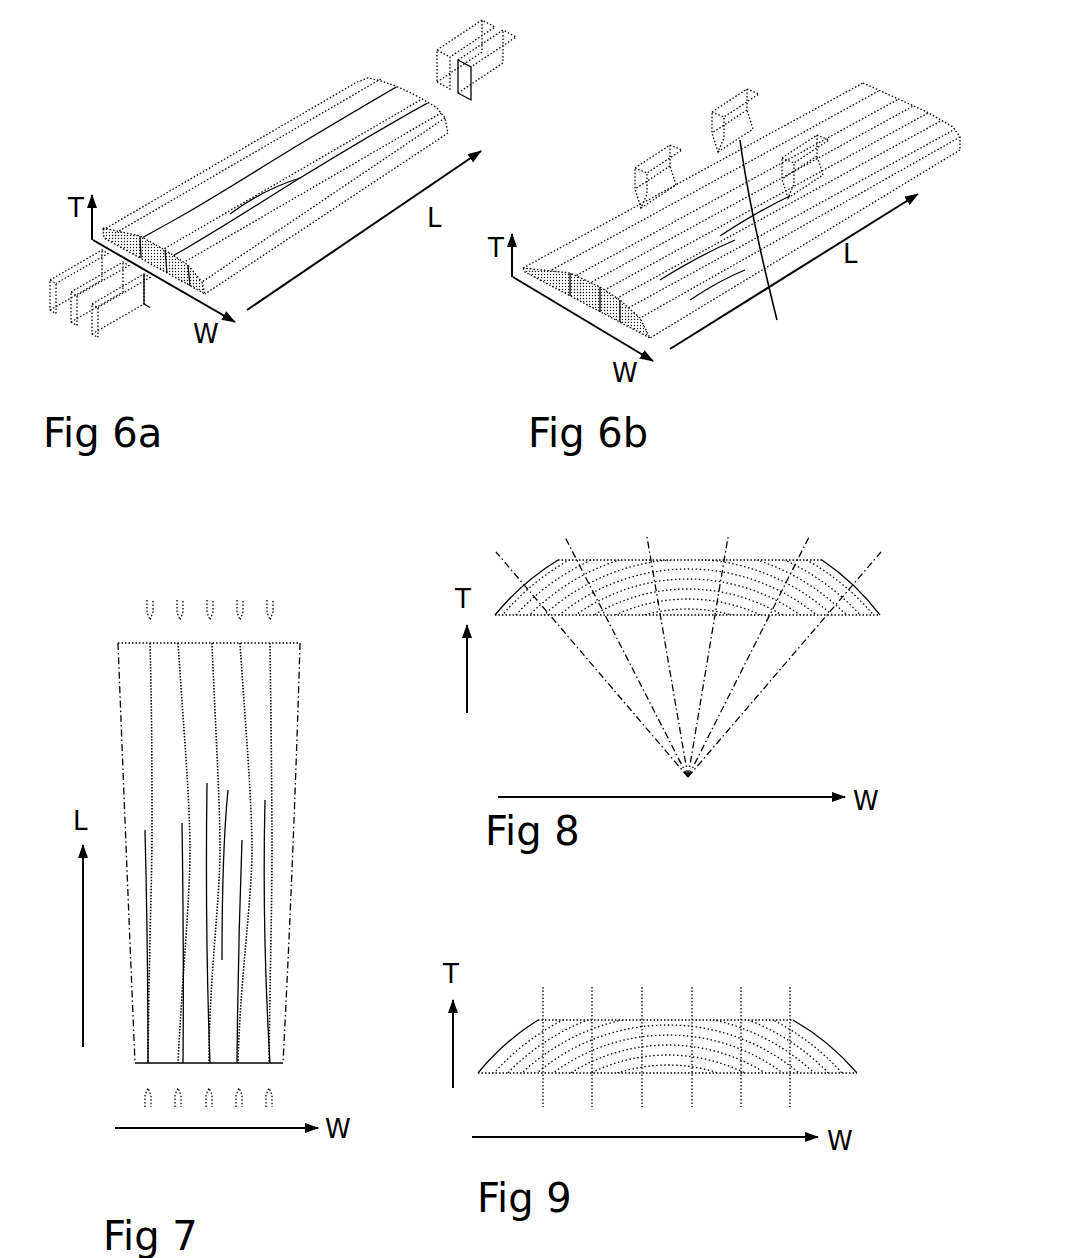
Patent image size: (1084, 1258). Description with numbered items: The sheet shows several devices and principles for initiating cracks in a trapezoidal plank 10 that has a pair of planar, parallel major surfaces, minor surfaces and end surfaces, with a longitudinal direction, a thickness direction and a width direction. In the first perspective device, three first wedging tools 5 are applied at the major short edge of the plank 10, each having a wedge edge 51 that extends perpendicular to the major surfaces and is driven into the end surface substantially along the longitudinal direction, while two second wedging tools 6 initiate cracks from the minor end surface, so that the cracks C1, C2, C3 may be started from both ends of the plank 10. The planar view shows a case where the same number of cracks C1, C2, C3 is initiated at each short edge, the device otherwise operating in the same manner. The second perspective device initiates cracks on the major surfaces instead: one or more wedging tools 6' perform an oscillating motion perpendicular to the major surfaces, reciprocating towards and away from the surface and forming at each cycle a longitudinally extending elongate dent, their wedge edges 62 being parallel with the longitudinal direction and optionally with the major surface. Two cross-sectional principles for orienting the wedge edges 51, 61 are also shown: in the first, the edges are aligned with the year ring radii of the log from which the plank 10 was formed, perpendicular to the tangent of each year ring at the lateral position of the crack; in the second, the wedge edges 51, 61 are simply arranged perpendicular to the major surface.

In FIG. 6A, the plank 10 is at (211, 182).
In FIG. 6B, the plank 10 is at (587, 255).
In FIG. 7, the plank 10 is at (297, 728).
In FIG. 8, the plank 10 is at (823, 568).
In FIG. 9, the plank 10 is at (812, 1047).
In FIG. 6A, the first wedging tools 5 is at (110, 317).
In FIG. 7, the first wedging tools 5 is at (274, 1093).
In FIG. 6A, the wedge edge 51 is at (145, 295).
In FIG. 6A, the second wedging tools 6 is at (487, 89).
In FIG. 7, the second wedging tools 6 is at (252, 604).
In FIG. 6A, the wedge edge 61 is at (437, 70).
In FIG. 6B, the wedging tools 6' is at (732, 136).
In FIG. 6B, the wedge edges 62 is at (767, 244).
In FIG. 7, the crack C1 is at (272, 1008).
In FIG. 8, the crack C1 is at (740, 720).
In FIG. 9, the crack C1 is at (790, 1017).
In FIG. 7, the crack C2 is at (243, 962).
In FIG. 8, the crack C2 is at (737, 680).
In FIG. 9, the crack C2 is at (740, 1002).
In FIG. 7, the crack C3 is at (207, 937).
In FIG. 8, the crack C3 is at (710, 642).
In FIG. 9, the crack C3 is at (688, 1005).